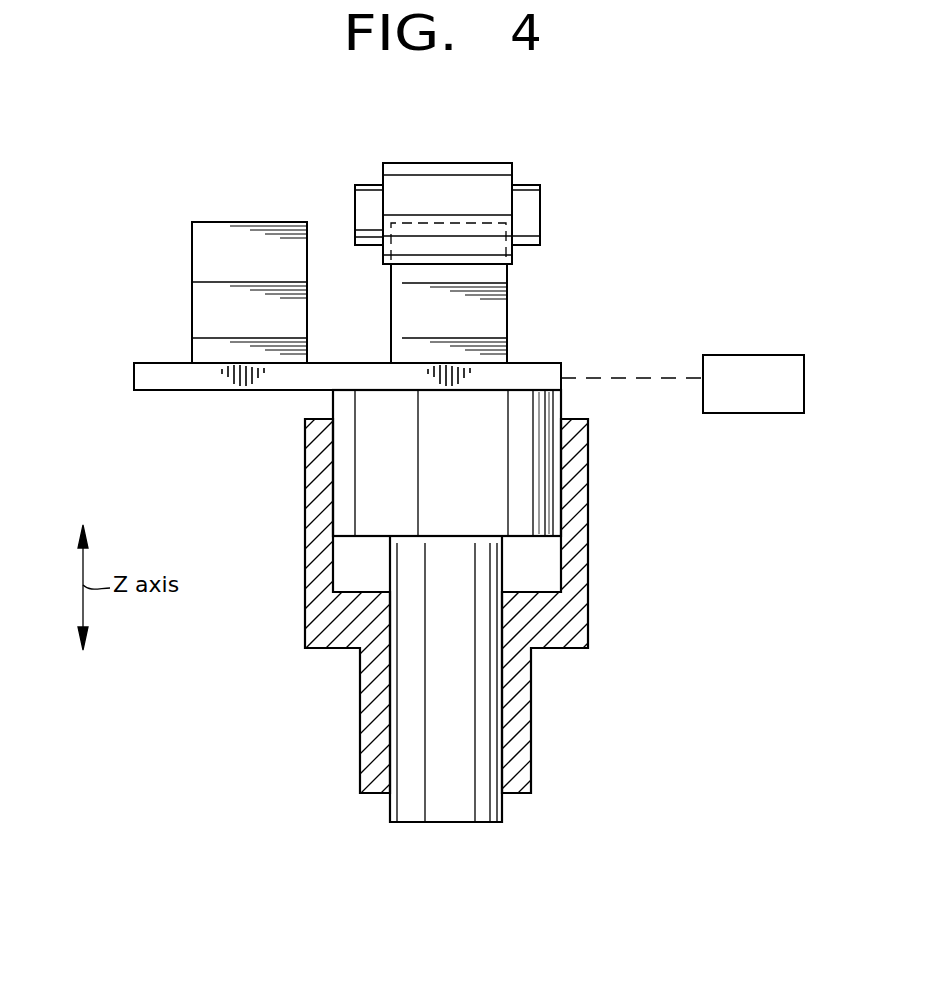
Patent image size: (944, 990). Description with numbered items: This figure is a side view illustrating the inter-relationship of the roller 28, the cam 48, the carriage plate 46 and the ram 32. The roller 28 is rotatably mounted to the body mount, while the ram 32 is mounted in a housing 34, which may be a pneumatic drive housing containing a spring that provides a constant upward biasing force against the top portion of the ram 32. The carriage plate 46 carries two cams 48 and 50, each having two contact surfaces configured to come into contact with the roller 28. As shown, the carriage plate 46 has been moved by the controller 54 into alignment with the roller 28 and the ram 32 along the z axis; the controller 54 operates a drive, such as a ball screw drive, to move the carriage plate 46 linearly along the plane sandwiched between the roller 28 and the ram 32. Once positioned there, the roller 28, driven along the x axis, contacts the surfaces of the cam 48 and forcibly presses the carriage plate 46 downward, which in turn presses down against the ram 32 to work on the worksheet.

The roller 28 is at (455, 163).
The ram 32 is at (462, 503).
The housing 34 is at (588, 578).
The carriage plate 46 is at (134, 378).
The cam 48 is at (507, 325).
The cam 50 is at (192, 299).
The controller 54 is at (750, 355).